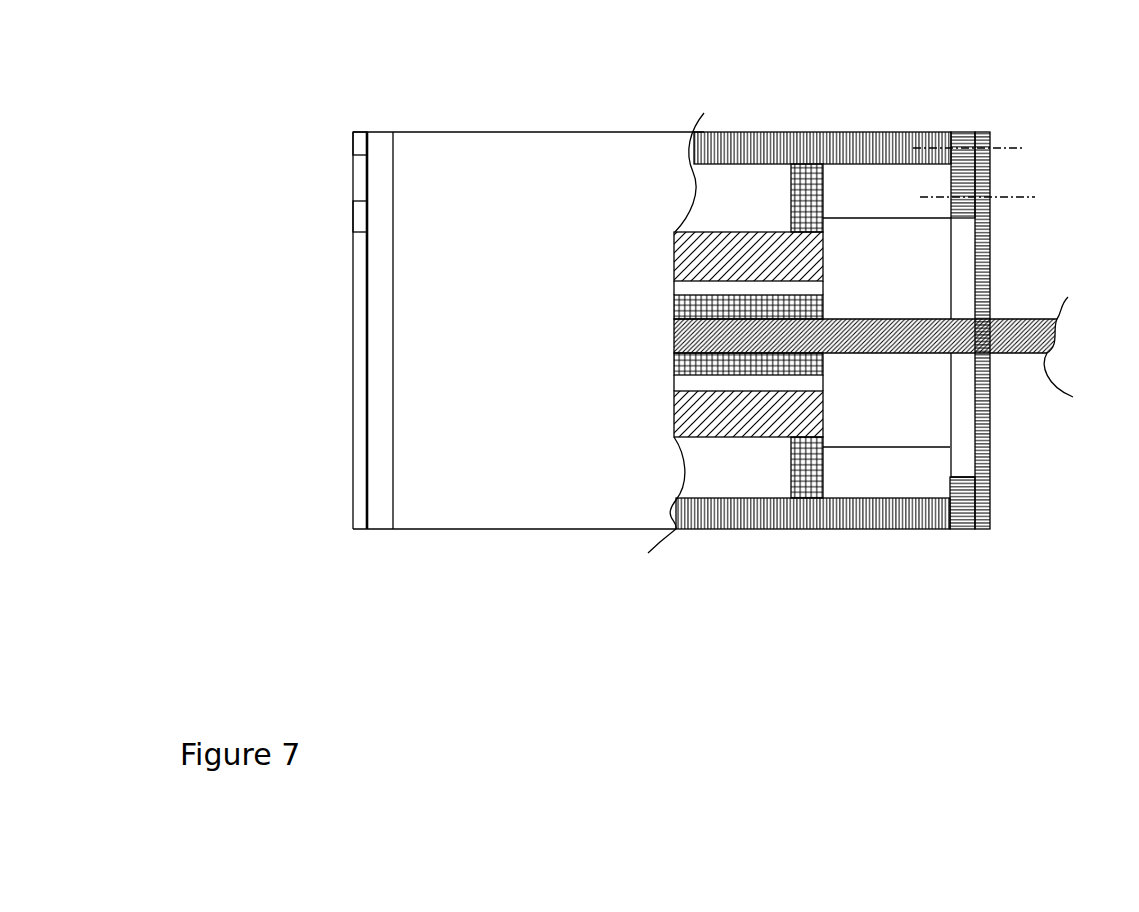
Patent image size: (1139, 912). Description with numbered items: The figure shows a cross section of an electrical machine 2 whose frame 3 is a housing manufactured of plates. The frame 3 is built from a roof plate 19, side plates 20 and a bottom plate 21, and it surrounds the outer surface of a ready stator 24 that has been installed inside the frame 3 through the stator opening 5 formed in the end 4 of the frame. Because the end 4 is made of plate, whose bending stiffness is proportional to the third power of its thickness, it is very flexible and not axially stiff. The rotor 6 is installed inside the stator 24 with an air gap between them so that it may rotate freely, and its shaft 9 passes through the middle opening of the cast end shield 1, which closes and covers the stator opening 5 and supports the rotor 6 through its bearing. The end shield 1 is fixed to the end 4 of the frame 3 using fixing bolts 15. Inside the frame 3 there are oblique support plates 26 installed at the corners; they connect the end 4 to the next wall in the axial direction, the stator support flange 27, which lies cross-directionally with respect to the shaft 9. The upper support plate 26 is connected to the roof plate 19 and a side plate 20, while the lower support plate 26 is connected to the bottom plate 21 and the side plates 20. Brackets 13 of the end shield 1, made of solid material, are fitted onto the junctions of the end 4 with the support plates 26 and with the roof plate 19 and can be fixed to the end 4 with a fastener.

The cast end shield 1 is at (358, 425).
The electrical machine 2 is at (433, 103).
The frame 3 is at (466, 373).
The end of the frame 4 is at (960, 513).
The stator opening 5 is at (962, 388).
The rotor 6 is at (701, 367).
The shaft 9 is at (1020, 327).
The brackets 13 is at (360, 138).
The fixing bolts 15 is at (1007, 195).
The roof plate 19 is at (878, 145).
The side plate 20 is at (527, 492).
The bottom plate 21 is at (893, 530).
The stator 24 is at (754, 242).
The oblique support plates 26 is at (909, 211).
The stator support flange 27 is at (800, 465).